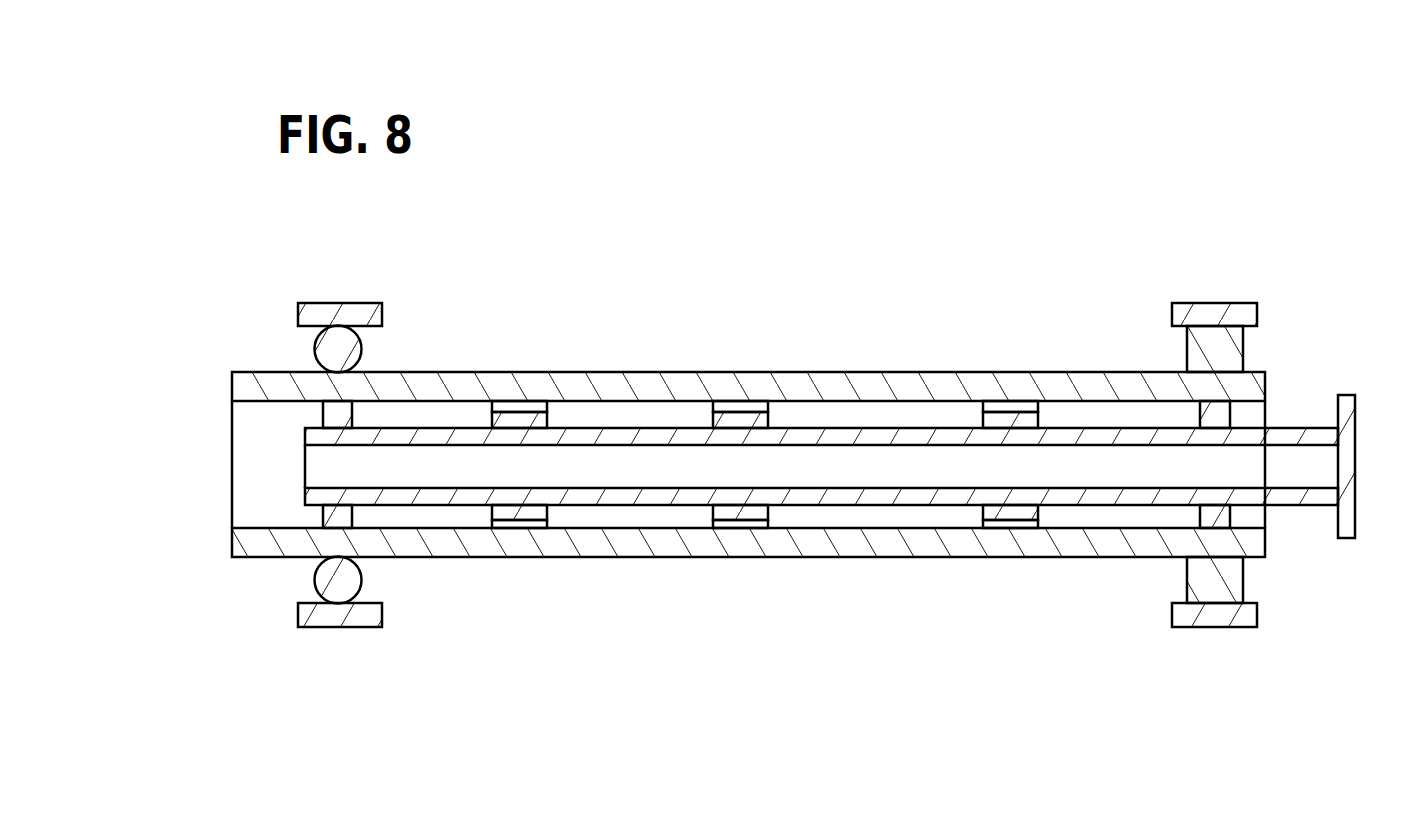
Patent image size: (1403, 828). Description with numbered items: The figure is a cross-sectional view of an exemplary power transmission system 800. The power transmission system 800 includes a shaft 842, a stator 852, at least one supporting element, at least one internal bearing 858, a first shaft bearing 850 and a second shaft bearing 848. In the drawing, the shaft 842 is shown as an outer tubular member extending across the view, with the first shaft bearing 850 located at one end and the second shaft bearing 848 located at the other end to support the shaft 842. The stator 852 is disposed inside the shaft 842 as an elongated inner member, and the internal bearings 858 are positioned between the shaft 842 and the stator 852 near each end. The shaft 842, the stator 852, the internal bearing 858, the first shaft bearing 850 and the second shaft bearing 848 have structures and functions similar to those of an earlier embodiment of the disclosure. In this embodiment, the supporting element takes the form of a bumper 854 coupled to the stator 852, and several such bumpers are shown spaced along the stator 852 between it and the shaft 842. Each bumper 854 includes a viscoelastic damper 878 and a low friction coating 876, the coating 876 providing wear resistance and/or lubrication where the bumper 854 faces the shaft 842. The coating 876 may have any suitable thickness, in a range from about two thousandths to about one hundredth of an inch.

The power transmission system 800 is at (1090, 242).
The shaft 842 is at (813, 372).
The second shaft bearing 848 is at (1243, 352).
The first shaft bearing 850 is at (362, 348).
The stator 852 is at (1283, 428).
The bumper 854 is at (567, 327).
The internal bearing 858 is at (323, 510).
The low friction coating 876 is at (500, 402).
The viscoelastic damper 878 is at (538, 418).